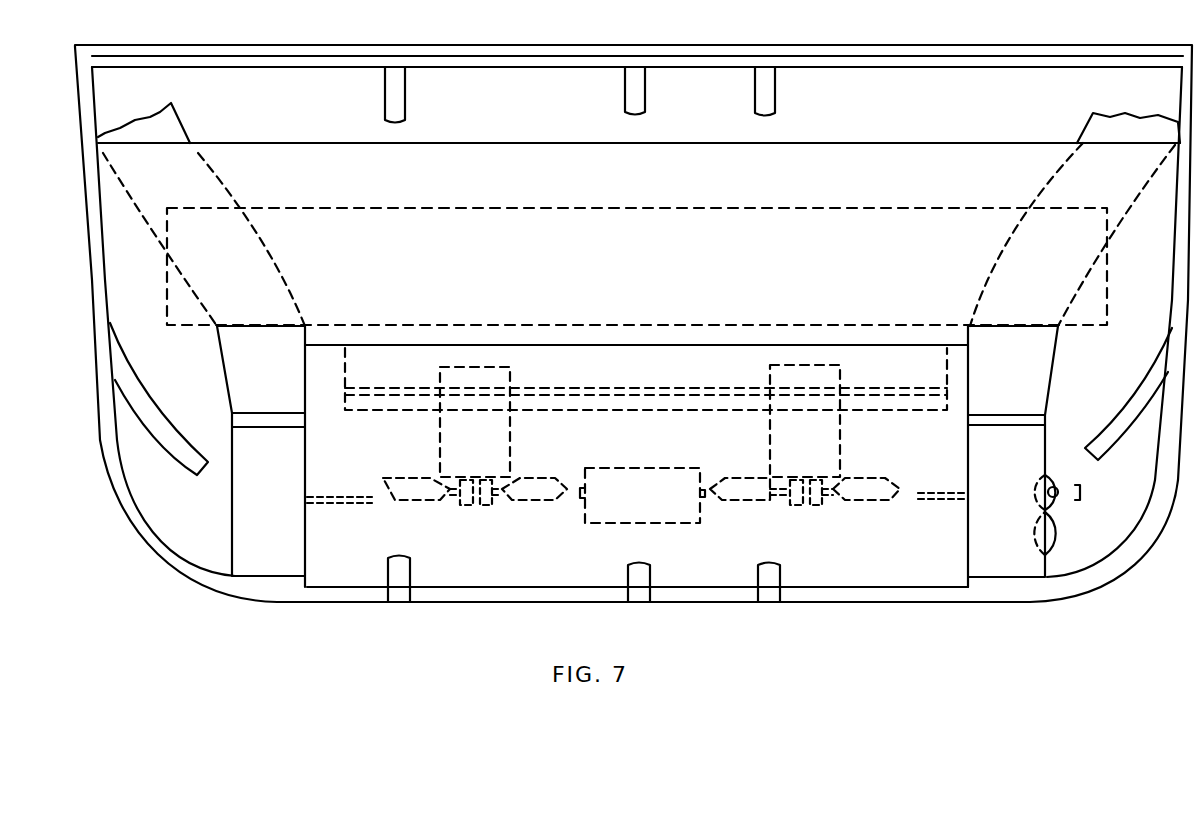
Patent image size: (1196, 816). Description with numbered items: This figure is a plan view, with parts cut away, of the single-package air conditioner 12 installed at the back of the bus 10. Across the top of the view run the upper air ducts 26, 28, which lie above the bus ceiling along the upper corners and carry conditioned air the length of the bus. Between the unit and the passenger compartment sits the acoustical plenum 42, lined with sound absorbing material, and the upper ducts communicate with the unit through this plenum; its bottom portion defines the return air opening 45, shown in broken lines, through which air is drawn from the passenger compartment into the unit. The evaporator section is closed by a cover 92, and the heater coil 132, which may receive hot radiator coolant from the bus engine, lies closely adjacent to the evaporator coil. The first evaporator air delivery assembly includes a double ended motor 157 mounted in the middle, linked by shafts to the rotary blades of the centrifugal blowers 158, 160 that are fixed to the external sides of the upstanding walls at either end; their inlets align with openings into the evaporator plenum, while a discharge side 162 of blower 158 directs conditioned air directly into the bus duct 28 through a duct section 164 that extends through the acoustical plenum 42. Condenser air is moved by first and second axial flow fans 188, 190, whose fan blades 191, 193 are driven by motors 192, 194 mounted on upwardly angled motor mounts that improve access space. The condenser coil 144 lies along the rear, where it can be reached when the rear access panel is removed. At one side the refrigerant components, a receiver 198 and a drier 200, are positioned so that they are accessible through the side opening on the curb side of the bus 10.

The bus 10 is at (1140, 535).
The air conditioner 12 is at (186, 391).
The upper air duct 26 is at (188, 127).
The upper air duct 28 is at (1083, 132).
The acoustical plenum 42 is at (920, 142).
The return air opening 45 is at (895, 213).
The cover 92 is at (400, 352).
The heater coil 132 is at (345, 400).
The condenser coil 144 is at (567, 575).
The double ended motor 157 is at (625, 468).
The centrifugal blower 158 is at (968, 450).
The centrifugal blower 160 is at (232, 520).
The discharge side 162 is at (998, 323).
The duct section 164 is at (1077, 283).
The axial flow fan 188 is at (760, 469).
The axial flow fan 190 is at (430, 470).
The fan blades 191 is at (856, 477).
The motor 192 is at (842, 440).
The fan blades 193 is at (383, 480).
The motor 194 is at (512, 432).
The receiver 198 is at (1060, 530).
The drier 200 is at (1070, 502).